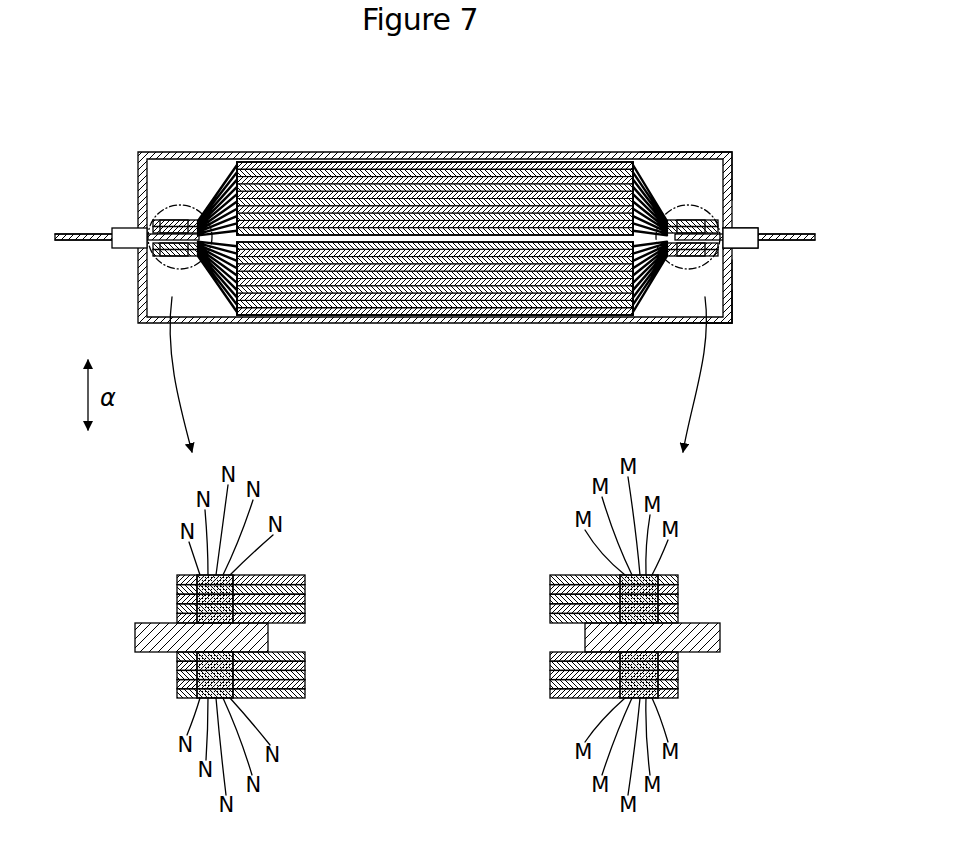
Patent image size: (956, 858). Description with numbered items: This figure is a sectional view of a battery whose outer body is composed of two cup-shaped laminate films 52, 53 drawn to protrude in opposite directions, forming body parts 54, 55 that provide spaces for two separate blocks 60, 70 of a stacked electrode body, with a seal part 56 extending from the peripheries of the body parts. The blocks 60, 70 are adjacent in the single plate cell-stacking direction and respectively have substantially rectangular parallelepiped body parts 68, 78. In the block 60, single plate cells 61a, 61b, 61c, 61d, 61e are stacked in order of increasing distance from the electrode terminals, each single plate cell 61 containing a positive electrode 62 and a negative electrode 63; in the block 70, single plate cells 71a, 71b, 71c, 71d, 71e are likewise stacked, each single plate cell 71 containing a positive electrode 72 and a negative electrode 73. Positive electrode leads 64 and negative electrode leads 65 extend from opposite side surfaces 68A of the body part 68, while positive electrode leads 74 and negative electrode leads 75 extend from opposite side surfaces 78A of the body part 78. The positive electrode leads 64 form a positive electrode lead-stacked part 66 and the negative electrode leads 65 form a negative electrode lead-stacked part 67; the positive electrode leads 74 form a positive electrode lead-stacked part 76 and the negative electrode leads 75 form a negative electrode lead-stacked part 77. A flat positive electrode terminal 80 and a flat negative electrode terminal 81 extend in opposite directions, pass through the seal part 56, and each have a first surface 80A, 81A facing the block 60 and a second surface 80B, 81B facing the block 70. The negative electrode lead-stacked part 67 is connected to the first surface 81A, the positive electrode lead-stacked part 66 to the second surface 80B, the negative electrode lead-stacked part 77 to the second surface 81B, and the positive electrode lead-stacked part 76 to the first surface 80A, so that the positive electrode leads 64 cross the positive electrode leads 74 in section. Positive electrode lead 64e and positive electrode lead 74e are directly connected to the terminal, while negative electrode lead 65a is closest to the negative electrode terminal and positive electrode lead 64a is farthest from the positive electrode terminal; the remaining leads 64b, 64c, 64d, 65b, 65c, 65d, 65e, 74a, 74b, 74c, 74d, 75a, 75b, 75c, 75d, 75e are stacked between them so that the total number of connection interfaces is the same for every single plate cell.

The laminate film 52 is at (730, 143).
The laminate film 53 is at (737, 338).
The body part 54 is at (732, 165).
The body part 55 is at (733, 300).
The seal part 56 is at (757, 227).
The block 60 is at (214, 170).
The single plate cell 61 is at (393, 97).
The single plate cell 61a is at (588, 208).
The single plate cell 61b is at (550, 190).
The single plate cell 61c is at (510, 185).
The single plate cell 61d is at (475, 175).
The single plate cell 61e is at (440, 168).
The positive electrode 62 is at (345, 163).
The negative electrode 63 is at (378, 168).
The positive electrode lead 64 is at (672, 220).
The positive electrode lead 64a is at (678, 694).
The positive electrode lead 64b is at (678, 685).
The positive electrode lead 64c is at (678, 676).
The positive electrode lead 64d is at (678, 666).
The positive electrode lead 64e is at (678, 657).
The negative electrode lead 65 is at (192, 218).
The negative electrode lead 65a is at (177, 618).
The negative electrode lead 65b is at (177, 609).
The negative electrode lead 65c is at (177, 599).
The negative electrode lead 65d is at (177, 590).
The negative electrode lead 65e is at (177, 580).
The positive electrode lead-stacked part 66 is at (703, 265).
The negative electrode lead-stacked part 67 is at (165, 210).
The body part 68 is at (297, 160).
The side surface 68A is at (232, 160).
The block 70 is at (200, 292).
The single plate cell 71 is at (322, 382).
The single plate cell 71a is at (586, 265).
The single plate cell 71b is at (548, 290).
The single plate cell 71c is at (510, 295).
The single plate cell 71d is at (472, 300).
The single plate cell 71e is at (438, 305).
The positive electrode 72 is at (347, 312).
The negative electrode 73 is at (380, 307).
The positive electrode lead 74 is at (693, 262).
The positive electrode lead 74a is at (678, 580).
The positive electrode lead 74b is at (678, 590).
The positive electrode lead 74c is at (678, 599).
The positive electrode lead 74d is at (678, 609).
The positive electrode lead 74e is at (678, 618).
The negative electrode lead 75 is at (190, 258).
The negative electrode lead 75a is at (177, 657).
The negative electrode lead 75b is at (177, 666).
The negative electrode lead 75c is at (177, 676).
The negative electrode lead 75d is at (177, 685).
The negative electrode lead 75e is at (177, 694).
The positive electrode lead-stacked part 76 is at (704, 207).
The negative electrode lead-stacked part 77 is at (170, 260).
The body part 78 is at (297, 316).
The side surface 78A is at (237, 318).
The positive electrode terminal 80 is at (777, 245).
The first surface 80A is at (812, 232).
The second surface 80B is at (812, 245).
The negative electrode terminal 81 is at (100, 242).
The first surface 81A is at (62, 232).
The second surface 81B is at (67, 247).